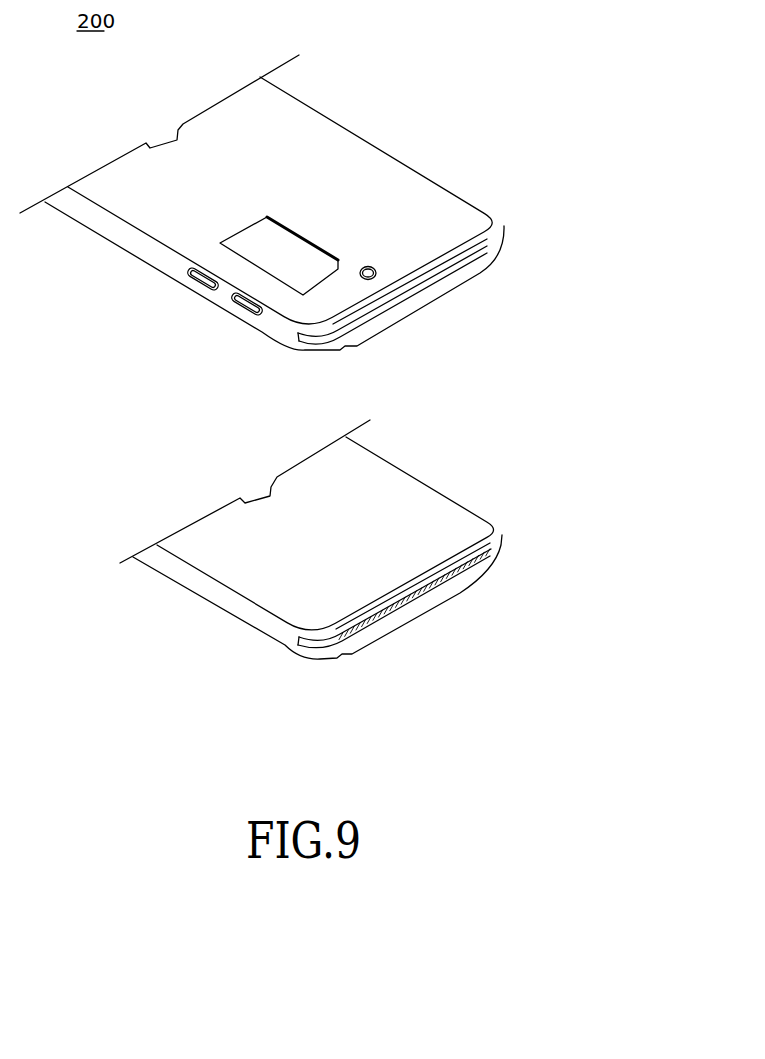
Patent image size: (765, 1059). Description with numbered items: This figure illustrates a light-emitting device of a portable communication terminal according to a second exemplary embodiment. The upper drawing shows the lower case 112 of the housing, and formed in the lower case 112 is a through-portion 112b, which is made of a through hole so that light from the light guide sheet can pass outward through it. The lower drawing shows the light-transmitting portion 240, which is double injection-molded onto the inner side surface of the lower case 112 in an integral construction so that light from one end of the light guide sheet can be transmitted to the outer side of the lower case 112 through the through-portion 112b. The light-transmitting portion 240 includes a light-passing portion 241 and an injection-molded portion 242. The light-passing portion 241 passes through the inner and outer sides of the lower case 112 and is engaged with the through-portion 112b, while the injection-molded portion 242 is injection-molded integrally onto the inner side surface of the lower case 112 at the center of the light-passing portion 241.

The lower case 112 is at (375, 158).
The through-portion 112b is at (432, 285).
The light-transmitting portion 240 is at (410, 500).
The light-passing portion 241 is at (502, 542).
The injection-molded portion 242 is at (412, 612).